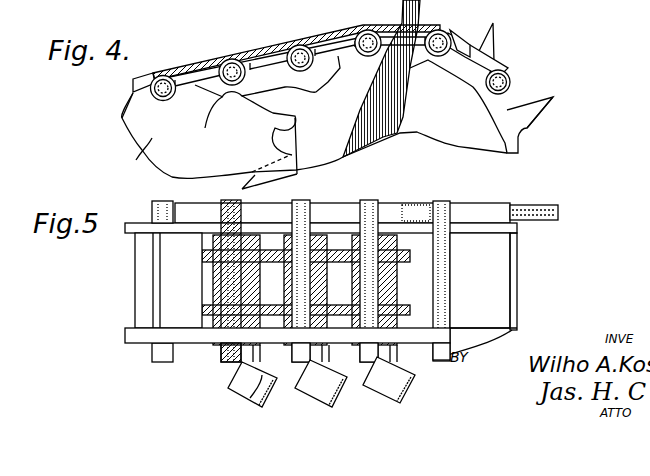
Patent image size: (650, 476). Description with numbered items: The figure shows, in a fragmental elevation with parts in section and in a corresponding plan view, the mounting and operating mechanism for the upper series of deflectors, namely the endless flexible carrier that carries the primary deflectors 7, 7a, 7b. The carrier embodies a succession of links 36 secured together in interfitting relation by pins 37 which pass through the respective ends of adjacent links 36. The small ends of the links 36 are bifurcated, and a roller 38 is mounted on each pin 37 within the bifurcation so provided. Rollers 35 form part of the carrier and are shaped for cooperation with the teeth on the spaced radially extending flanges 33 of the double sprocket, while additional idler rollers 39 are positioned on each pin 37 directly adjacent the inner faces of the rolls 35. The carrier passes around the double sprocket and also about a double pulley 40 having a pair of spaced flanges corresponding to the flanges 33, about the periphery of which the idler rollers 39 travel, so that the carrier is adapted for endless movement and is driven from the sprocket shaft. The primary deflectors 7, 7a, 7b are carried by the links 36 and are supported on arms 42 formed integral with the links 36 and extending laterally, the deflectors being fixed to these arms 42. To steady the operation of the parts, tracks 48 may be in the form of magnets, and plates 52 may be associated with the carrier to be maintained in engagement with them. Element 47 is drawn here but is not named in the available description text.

In FIG. 4, the radially extending flanges 33 is at (481, 106).
In FIG. 5, the rollers 35 is at (152, 203).
In FIG. 5, the links 36 is at (348, 245).
In FIG. 4, the pins 37 is at (331, 87).
In FIG. 5, the pins 37 is at (363, 240).
In FIG. 5, the roller 38 is at (222, 284).
In FIG. 5, the idler rollers 39 is at (155, 226).
In FIG. 4, the double pulley 40 is at (142, 150).
In FIG. 5, the arms 42 is at (228, 388).
In FIG. 4, the rail 47 is at (266, 48).
In FIG. 4, the tracks 48 is at (553, 97).
In FIG. 5, the tracks 48 is at (552, 208).
In FIG. 5, the plates 52 is at (483, 281).
In FIG. 5, the primary deflector 7 is at (395, 405).
In FIG. 5, the primary deflector 7a is at (320, 398).
In FIG. 5, the primary deflector 7b is at (250, 398).